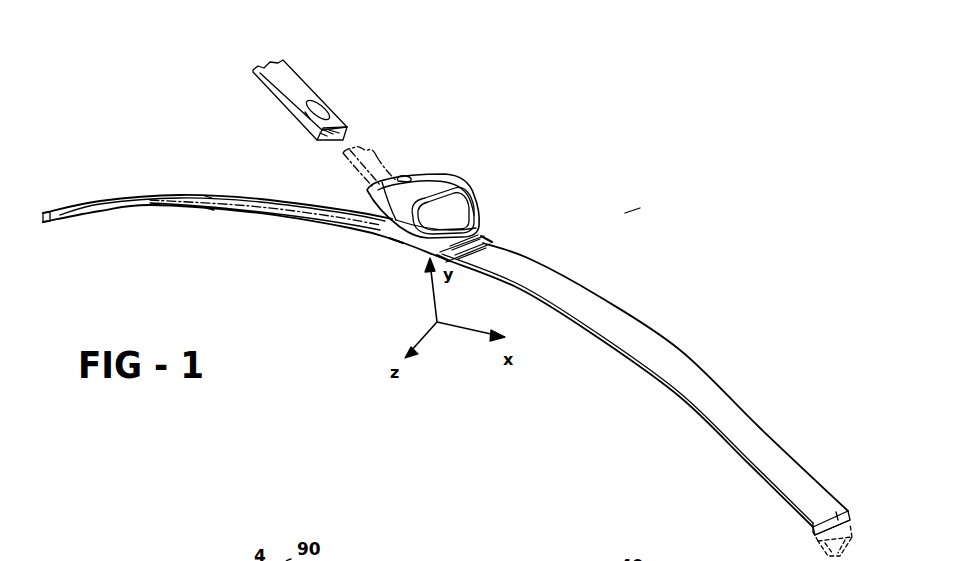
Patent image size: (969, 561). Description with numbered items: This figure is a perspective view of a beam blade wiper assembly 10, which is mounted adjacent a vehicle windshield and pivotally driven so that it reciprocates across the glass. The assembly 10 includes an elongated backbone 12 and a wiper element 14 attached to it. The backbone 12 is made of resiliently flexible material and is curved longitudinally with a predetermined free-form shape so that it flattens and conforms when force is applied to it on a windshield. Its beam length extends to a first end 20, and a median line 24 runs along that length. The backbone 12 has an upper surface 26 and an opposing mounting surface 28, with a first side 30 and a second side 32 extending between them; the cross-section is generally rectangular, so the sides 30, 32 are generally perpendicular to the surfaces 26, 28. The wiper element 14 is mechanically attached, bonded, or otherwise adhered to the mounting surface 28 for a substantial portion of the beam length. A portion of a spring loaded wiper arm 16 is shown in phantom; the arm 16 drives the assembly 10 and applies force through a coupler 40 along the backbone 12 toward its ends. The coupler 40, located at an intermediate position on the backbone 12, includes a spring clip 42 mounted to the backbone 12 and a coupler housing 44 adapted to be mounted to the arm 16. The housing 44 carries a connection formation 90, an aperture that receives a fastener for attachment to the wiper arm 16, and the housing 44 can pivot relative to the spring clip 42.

The beam blade wiper assembly 10 is at (624, 214).
The backbone 12 is at (620, 342).
The wiper element 14 is at (806, 513).
The spring loaded arm 16 is at (380, 157).
The first end 20 is at (60, 210).
The median line 24 is at (305, 204).
The upper surface 26 is at (210, 197).
The mounting surface 28 is at (210, 209).
The first side 30 is at (155, 204).
The second side 32 is at (180, 196).
The coupler 40 is at (460, 193).
The spring clip 42 is at (477, 239).
The coupler housing 44 is at (443, 208).
The connection formation 90 is at (407, 180).